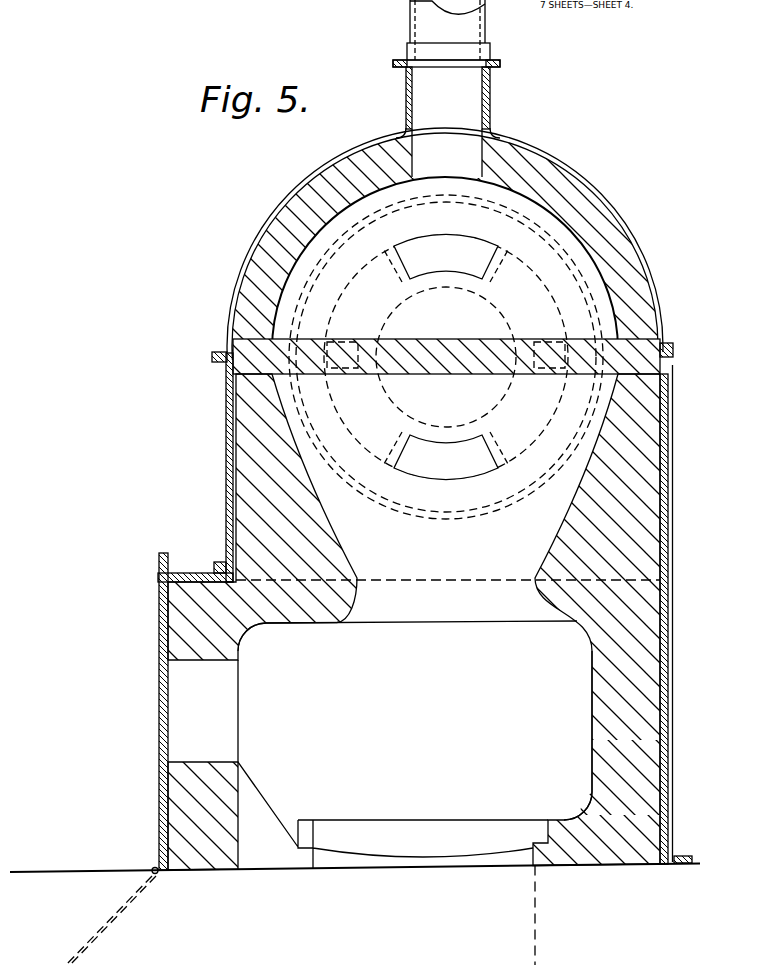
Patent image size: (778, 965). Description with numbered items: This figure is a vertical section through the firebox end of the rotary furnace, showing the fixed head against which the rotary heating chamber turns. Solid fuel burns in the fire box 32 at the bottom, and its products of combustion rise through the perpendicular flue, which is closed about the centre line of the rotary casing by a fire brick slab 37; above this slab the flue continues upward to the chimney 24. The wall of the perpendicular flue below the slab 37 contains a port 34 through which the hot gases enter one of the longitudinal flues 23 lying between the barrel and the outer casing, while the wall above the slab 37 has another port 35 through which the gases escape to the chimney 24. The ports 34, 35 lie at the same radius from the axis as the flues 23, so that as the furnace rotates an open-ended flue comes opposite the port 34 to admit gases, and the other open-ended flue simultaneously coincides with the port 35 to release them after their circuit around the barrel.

The chimney 24 is at (446, 88).
The flues 23 is at (446, 356).
The port 35 is at (482, 240).
The fire brick slab 37 is at (436, 375).
The port 34 is at (466, 478).
The fire box 32 is at (415, 744).